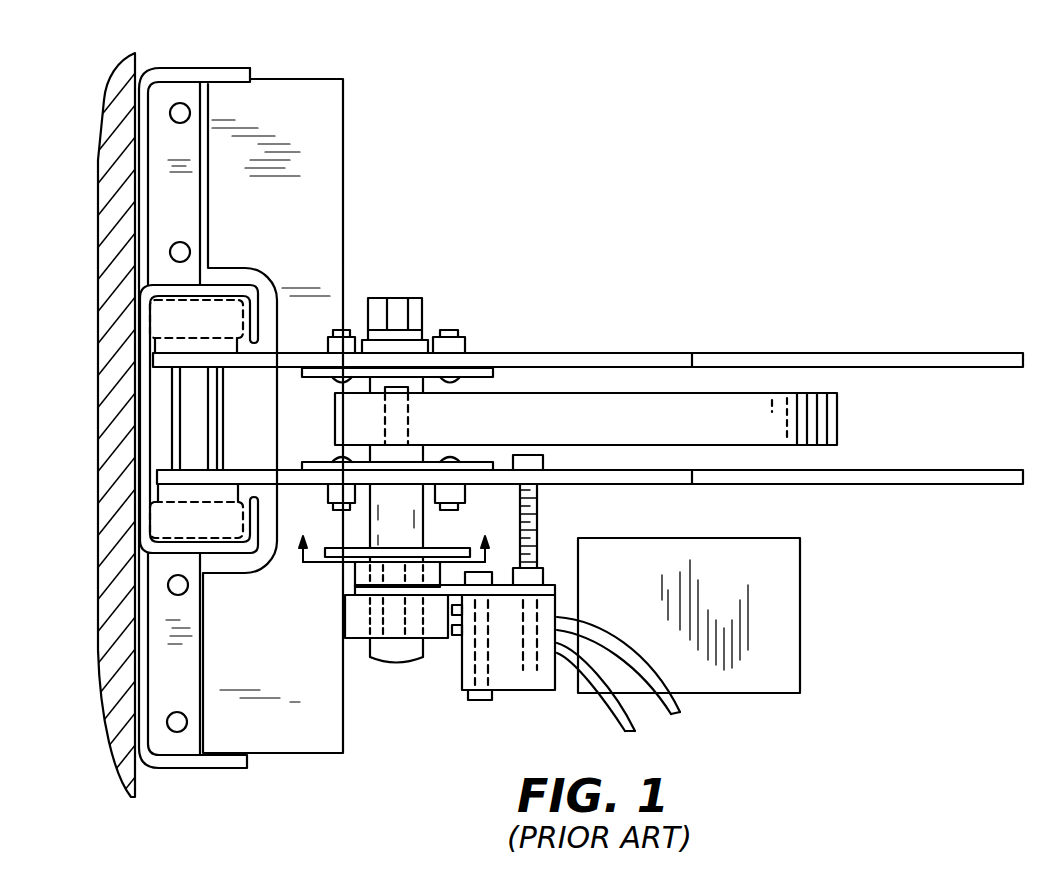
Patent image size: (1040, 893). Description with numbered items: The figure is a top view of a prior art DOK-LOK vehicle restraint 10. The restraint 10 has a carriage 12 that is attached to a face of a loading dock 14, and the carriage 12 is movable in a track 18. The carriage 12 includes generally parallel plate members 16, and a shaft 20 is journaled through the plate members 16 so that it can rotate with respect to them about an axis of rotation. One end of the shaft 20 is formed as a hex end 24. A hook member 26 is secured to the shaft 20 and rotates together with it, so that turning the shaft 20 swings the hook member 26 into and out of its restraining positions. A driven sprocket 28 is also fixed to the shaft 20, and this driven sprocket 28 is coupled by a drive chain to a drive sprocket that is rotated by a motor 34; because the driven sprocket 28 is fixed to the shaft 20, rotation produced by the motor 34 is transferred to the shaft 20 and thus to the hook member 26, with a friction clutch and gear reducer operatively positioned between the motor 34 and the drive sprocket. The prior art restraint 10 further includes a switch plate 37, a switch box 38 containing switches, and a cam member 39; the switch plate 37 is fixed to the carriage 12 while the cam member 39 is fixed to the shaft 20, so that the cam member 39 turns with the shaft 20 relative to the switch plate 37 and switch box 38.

The DOK-LOK restraint 10 is at (514, 107).
The carriage 12 is at (804, 323).
The loading dock 14 is at (110, 118).
The plate members 16 is at (1007, 350).
The track 18 is at (254, 298).
The shaft 20 is at (398, 514).
The hex end 24 is at (400, 306).
The hook member 26 is at (800, 420).
The driven sprocket 28 is at (360, 572).
The motor 34 is at (767, 587).
The switch plate 37 is at (360, 590).
The switch box 38 is at (520, 666).
The cam member 39 is at (357, 623).